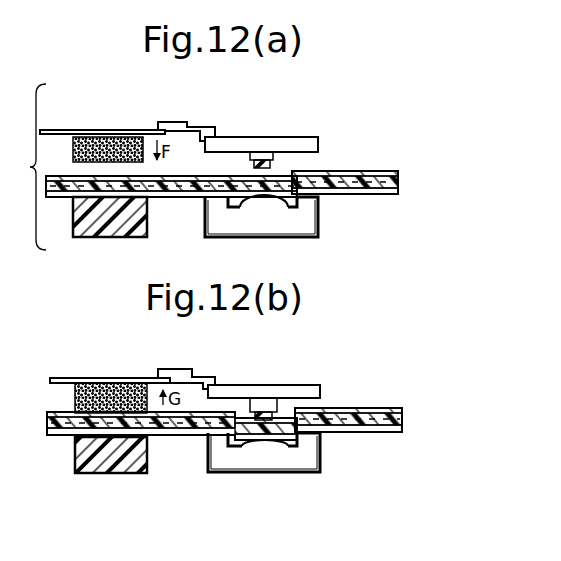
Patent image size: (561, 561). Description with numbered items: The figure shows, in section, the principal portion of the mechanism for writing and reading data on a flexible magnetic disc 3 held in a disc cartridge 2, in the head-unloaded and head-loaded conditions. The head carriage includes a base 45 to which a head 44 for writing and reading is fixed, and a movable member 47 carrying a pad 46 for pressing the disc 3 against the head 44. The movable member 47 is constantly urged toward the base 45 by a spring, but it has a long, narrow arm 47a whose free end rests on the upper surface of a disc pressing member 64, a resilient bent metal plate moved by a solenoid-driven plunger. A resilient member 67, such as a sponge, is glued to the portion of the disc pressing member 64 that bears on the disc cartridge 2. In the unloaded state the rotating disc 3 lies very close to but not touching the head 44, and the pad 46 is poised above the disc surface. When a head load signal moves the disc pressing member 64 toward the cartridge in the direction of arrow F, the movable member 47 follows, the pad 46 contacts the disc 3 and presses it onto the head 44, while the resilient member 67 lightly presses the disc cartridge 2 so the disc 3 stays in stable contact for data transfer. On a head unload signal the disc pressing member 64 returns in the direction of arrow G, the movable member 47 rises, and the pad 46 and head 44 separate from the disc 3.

In FIG. 12A, the disc cartridge 2 is at (354, 171).
In FIG. 12B, the disc cartridge 2 is at (349, 406).
In FIG. 12A, the flexible magnetic disc 3 is at (357, 195).
In FIG. 12B, the flexible magnetic disc 3 is at (357, 432).
In FIG. 12A, the head 44 is at (263, 202).
In FIG. 12B, the head 44 is at (262, 448).
In FIG. 12A, the base 45 is at (225, 222).
In FIG. 12B, the base 45 is at (225, 458).
In FIG. 12A, the pad 46 is at (265, 160).
In FIG. 12B, the pad 46 is at (265, 410).
In FIG. 12A, the movable member 47 is at (237, 143).
In FIG. 12B, the movable member 47 is at (236, 391).
In FIG. 12A, the long, narrow arm 47a is at (179, 122).
In FIG. 12B, the long, narrow arm 47a is at (179, 370).
In FIG. 12A, the disc pressing member 64 is at (113, 132).
In FIG. 12B, the disc pressing member 64 is at (123, 379).
In FIG. 12A, the resilient member 67 is at (85, 133).
In FIG. 12B, the resilient member 67 is at (80, 379).